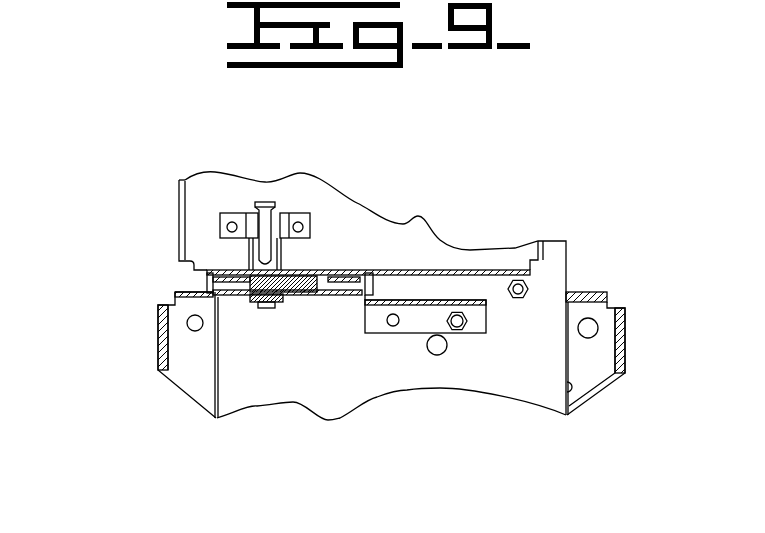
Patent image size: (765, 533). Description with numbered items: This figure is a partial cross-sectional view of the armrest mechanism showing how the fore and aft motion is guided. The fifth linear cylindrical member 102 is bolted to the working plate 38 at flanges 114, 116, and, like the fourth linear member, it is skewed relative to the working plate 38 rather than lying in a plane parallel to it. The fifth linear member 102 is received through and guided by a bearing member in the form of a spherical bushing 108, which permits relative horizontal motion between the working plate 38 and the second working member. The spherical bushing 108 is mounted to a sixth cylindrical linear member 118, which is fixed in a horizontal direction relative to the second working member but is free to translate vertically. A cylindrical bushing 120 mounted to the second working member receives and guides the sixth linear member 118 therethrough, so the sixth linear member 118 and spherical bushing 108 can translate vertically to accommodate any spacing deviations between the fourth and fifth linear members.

The working plate 38 is at (408, 378).
The fifth linear cylindrical member 102 is at (297, 296).
The spherical bushing 108 is at (267, 308).
The flange 114 is at (213, 298).
The flange 116 is at (362, 297).
The sixth cylindrical linear member 118 is at (265, 202).
The cylindrical bushing 120 is at (298, 213).